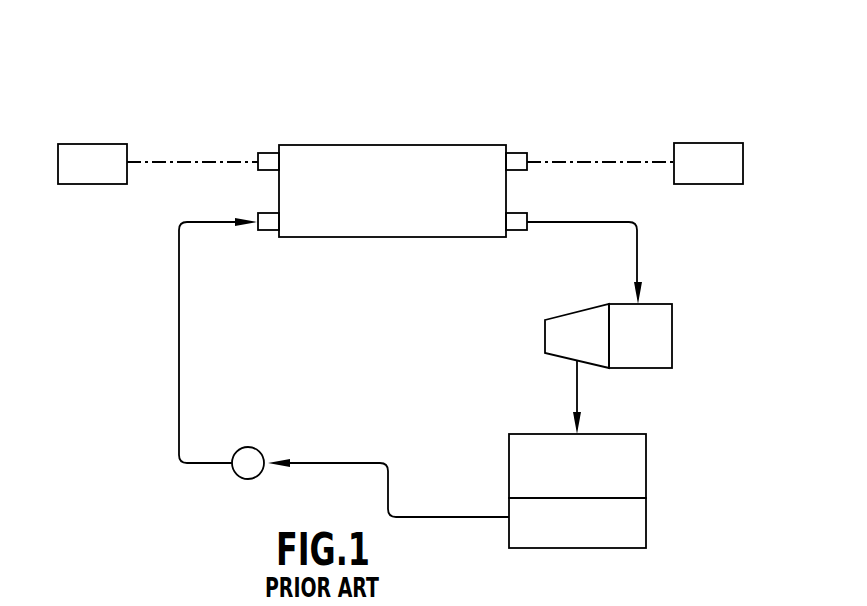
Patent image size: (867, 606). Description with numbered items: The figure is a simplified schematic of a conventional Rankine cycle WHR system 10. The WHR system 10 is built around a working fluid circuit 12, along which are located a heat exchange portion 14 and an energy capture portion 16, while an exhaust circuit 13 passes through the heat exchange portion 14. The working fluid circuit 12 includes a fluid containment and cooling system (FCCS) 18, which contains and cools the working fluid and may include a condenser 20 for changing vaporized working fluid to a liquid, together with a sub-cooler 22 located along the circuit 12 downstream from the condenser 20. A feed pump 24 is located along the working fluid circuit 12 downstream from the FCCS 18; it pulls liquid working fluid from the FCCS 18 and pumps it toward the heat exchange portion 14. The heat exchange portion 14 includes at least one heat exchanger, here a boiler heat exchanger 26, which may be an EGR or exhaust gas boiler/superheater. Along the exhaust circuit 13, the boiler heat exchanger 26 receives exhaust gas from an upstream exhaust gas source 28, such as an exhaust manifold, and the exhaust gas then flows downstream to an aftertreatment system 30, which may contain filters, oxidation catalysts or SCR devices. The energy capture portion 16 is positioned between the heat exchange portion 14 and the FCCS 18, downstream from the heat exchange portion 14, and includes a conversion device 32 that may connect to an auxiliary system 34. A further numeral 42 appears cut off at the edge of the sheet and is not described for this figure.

The Rankine cycle WHR system 10 is at (175, 70).
The working fluid circuit 12 is at (165, 354).
The exhaust circuit 13 is at (197, 162).
The heat exchange portion 14 is at (380, 147).
The energy capture portion 16 is at (597, 314).
The fluid containment and cooling system 18 is at (570, 465).
The condenser 20 is at (646, 468).
The sub-cooler 22 is at (646, 523).
The feed pump 24 is at (242, 480).
The boiler heat exchanger 26 is at (402, 205).
The exhaust gas source 28 is at (107, 176).
The aftertreatment system 30 is at (722, 176).
The conversion device 32 is at (545, 334).
The auxiliary system 34 is at (672, 333).
The partial numeral at sheet edge 42 is at (77, 602).